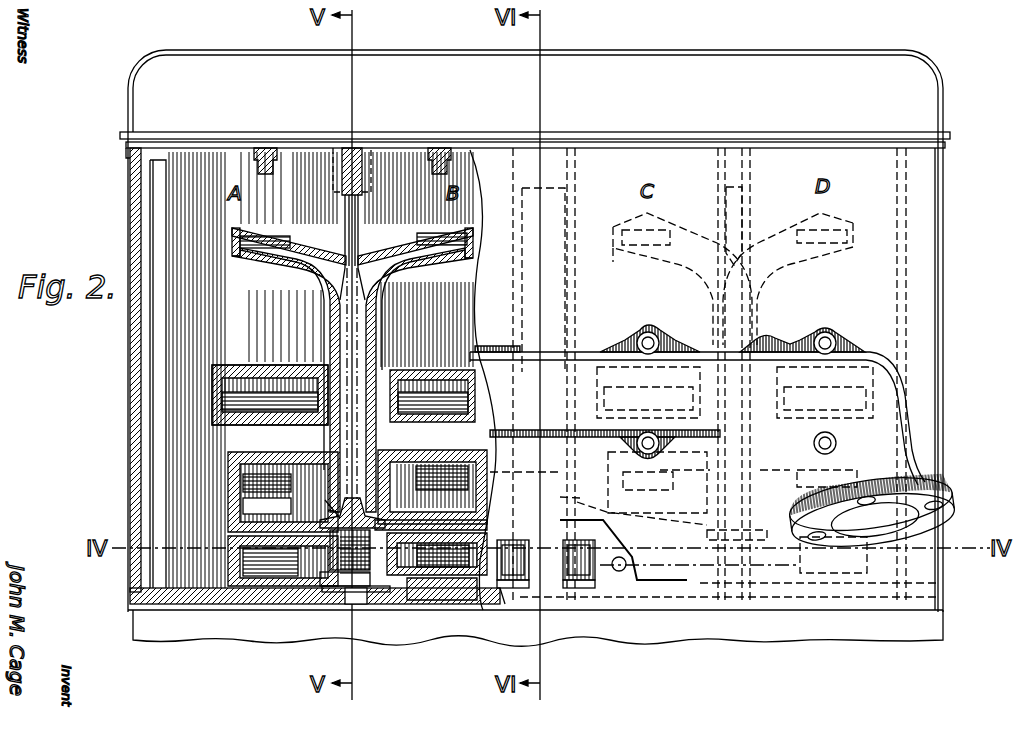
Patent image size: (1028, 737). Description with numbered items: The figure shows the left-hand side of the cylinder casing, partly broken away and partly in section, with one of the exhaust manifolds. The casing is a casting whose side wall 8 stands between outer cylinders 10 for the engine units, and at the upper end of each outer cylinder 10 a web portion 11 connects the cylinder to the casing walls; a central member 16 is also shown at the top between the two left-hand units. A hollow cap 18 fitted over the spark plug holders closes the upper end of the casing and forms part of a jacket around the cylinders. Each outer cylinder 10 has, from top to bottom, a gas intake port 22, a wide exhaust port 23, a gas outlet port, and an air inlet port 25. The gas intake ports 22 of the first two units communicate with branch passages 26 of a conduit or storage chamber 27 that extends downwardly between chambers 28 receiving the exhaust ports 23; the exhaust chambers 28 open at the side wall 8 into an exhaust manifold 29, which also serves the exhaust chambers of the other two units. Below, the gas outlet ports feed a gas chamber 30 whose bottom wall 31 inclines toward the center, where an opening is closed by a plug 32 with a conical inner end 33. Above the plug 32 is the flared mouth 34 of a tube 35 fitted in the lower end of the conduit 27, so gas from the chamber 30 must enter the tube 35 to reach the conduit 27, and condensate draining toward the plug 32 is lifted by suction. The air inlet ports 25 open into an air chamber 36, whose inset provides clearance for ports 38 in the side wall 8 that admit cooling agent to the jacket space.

The hollow cap 18 is at (641, 62).
The web portion 11 is at (264, 150).
The central post 16 is at (358, 150).
The outer cylinder 10 is at (352, 370).
The gas intake port 22 is at (260, 261).
The branch passage 26 is at (440, 252).
The conduit or storage chamber 27 is at (366, 330).
The exhaust port 23 is at (248, 375).
The exhaust chamber 28 is at (230, 398).
The gas chamber 30 is at (228, 513).
The conical inner end 33 is at (340, 512).
The air inlet port 25 is at (255, 572).
The air chamber 36 is at (302, 560).
The tube 35 is at (370, 445).
The flared mouth 34 is at (420, 472).
The bottom wall 31 is at (447, 522).
The plug 32 is at (310, 598).
The exhaust manifold 29 is at (565, 358).
The side wall 8 is at (871, 417).
The port 38 is at (580, 585).